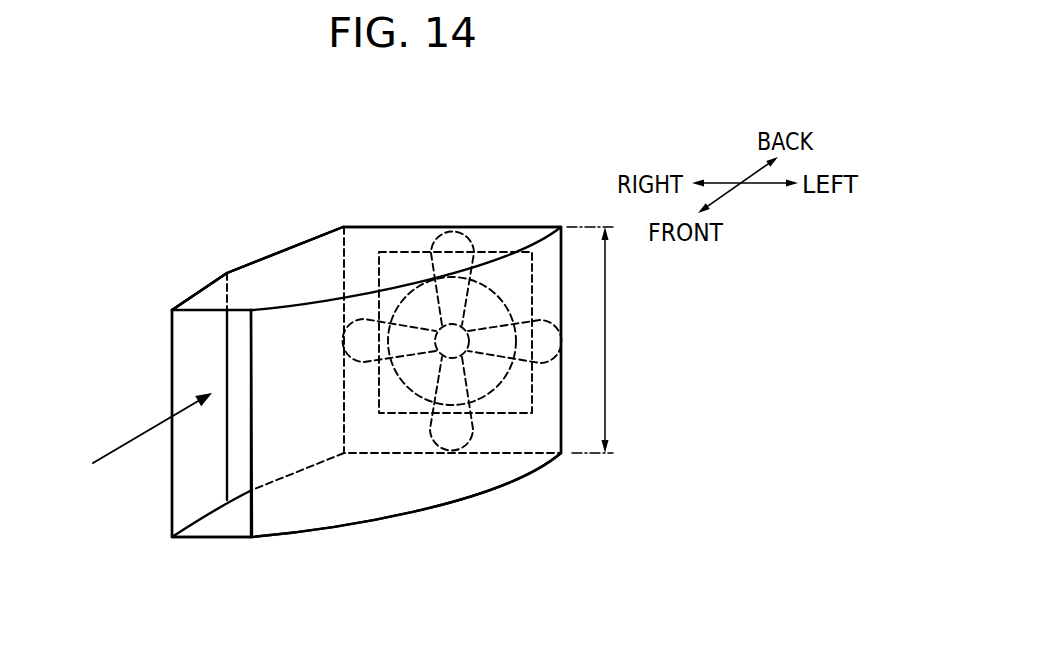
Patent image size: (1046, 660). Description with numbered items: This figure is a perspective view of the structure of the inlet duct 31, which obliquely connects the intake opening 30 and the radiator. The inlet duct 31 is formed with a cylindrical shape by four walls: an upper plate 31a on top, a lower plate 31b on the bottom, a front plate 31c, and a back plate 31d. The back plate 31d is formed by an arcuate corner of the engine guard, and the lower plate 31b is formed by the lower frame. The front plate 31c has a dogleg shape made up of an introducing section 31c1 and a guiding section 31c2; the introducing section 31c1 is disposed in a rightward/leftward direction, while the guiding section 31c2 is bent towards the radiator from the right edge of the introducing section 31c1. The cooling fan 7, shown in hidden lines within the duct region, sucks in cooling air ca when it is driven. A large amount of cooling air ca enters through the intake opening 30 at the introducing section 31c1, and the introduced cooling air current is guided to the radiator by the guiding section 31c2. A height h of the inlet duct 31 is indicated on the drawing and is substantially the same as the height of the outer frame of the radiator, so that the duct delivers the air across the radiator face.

The inlet duct 31 is at (413, 222).
The upper plate 31a is at (321, 262).
The lower plate 31b is at (377, 523).
The front plate 31c is at (270, 175).
The introducing section 31c1 is at (196, 293).
The guiding section 31c2 is at (280, 250).
The back plate 31d is at (522, 437).
The intake opening 30 is at (217, 518).
The cooling fan 7 is at (543, 320).
The cooling air ca is at (113, 448).
The height of the inlet duct h is at (595, 340).